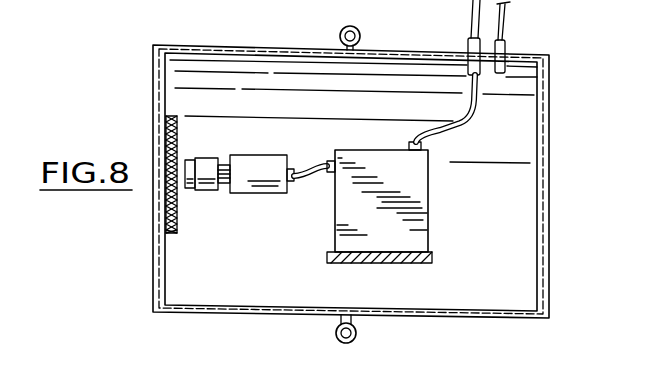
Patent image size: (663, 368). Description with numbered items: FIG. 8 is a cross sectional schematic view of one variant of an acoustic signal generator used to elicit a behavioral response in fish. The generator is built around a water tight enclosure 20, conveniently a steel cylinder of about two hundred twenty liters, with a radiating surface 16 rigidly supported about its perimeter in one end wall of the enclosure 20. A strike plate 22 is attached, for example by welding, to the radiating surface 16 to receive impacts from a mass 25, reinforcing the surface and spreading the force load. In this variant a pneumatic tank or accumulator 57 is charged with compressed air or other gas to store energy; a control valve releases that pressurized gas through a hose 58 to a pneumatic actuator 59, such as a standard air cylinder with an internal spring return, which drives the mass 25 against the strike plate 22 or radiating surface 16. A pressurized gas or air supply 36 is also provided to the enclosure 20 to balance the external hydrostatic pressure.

The radiating surface 16 is at (153, 254).
The water tight enclosure 20 is at (545, 148).
The strike plate 22 is at (176, 228).
The mass 25 is at (205, 183).
The pneumatic actuator 59 is at (257, 187).
The hose 58 is at (303, 181).
The pneumatic tank or accumulator 57 is at (413, 240).
The pressurized gas or air supply 36 is at (511, 45).